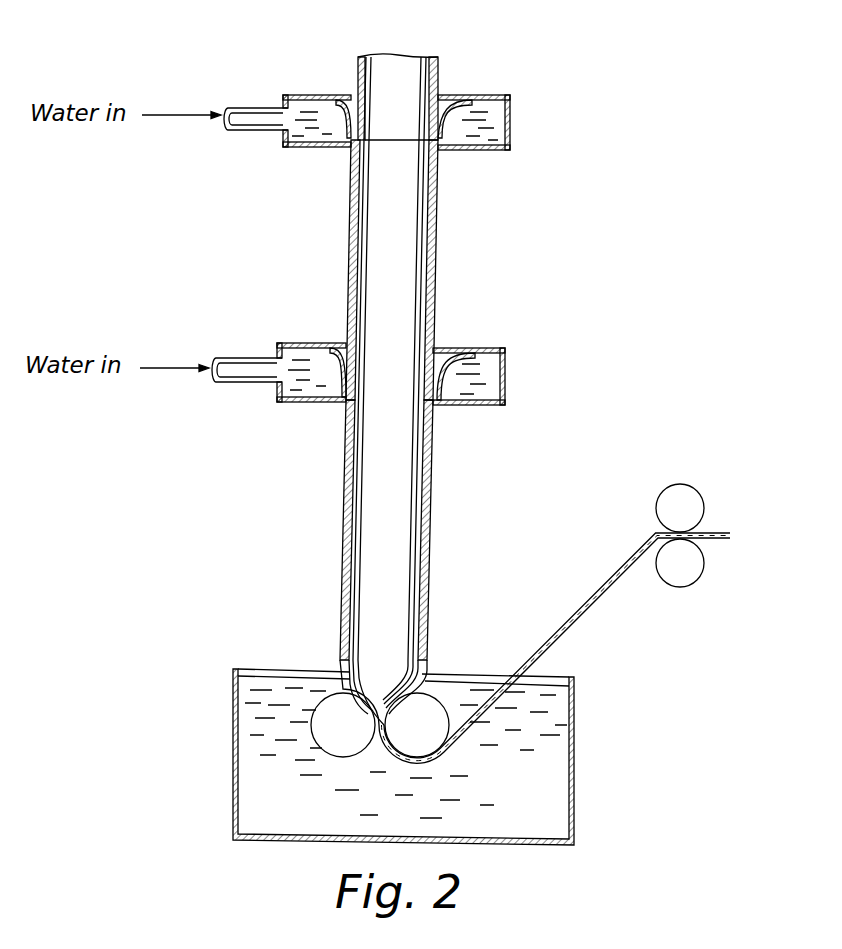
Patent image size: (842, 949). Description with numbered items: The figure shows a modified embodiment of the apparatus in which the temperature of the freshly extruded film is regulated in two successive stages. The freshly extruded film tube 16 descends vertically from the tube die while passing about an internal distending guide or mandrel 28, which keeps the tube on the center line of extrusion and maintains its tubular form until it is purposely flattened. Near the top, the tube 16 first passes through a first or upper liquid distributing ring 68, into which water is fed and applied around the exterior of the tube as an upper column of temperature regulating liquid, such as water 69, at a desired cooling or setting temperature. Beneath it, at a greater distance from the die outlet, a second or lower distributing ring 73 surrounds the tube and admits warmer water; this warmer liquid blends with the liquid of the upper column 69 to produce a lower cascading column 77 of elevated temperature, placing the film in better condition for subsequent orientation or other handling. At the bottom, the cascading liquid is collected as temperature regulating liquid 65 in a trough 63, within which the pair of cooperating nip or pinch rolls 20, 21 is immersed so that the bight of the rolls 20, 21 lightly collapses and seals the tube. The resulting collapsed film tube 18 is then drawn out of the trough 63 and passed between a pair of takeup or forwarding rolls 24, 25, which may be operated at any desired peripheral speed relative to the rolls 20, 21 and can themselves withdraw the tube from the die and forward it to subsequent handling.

The freshly extruded film tube 16 is at (433, 277).
The collapsed film tube 18 is at (578, 617).
The nip roll 20 is at (352, 724).
The nip roll 21 is at (420, 724).
The takeup roll 24 is at (693, 502).
The takeup roll 25 is at (693, 570).
The internal distending guide or mandrel 28 is at (432, 63).
The trough 63 is at (512, 843).
The temperature regulating liquid 65 is at (526, 798).
The first or upper liquid distributing ring 68 is at (309, 146).
The upper liquid column 69 is at (350, 256).
The second or lower distributing ring 73 is at (280, 398).
The lower cascading column 77 is at (342, 511).